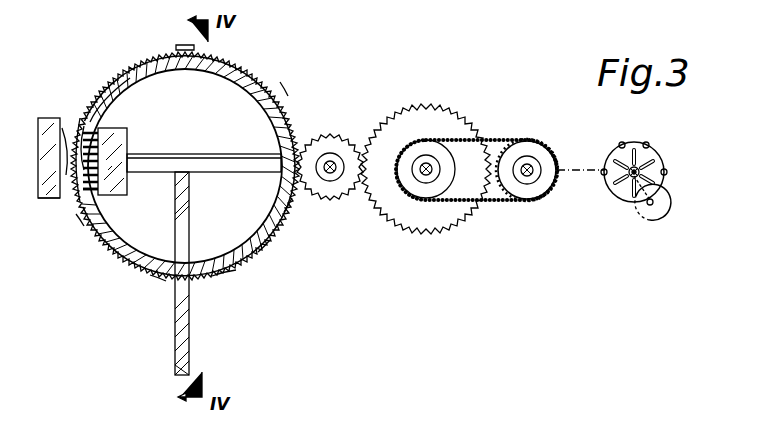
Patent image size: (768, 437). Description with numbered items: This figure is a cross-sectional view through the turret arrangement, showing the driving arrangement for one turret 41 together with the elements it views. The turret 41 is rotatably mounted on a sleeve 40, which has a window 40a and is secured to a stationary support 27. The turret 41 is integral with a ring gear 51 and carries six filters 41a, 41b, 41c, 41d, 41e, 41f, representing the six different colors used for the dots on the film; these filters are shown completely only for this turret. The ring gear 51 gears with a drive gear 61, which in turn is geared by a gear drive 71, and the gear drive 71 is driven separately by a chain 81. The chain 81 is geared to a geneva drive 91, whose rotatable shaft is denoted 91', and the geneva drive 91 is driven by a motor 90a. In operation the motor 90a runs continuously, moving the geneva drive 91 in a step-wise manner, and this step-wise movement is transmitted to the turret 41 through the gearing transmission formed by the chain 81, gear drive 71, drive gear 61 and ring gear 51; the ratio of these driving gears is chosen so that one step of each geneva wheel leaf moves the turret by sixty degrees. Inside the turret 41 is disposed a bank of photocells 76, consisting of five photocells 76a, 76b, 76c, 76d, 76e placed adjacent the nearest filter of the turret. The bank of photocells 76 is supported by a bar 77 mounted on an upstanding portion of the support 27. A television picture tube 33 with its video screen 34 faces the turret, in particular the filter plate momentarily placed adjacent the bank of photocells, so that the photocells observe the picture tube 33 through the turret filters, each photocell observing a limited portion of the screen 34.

The stationary support 27 is at (190, 350).
The television picture tube 33 is at (42, 200).
The video screen 34 is at (38, 120).
The sleeve 40 is at (236, 68).
The window 40a is at (130, 86).
The turret 41 is at (284, 72).
The filter 41a is at (180, 46).
The filter 41b is at (284, 88).
The filter 41c is at (290, 208).
The filter 41d is at (280, 250).
The filter 41e is at (158, 278).
The filter 41f is at (80, 222).
The ring gear 51 is at (230, 275).
The drive gear 61 is at (334, 200).
The gear drive 71 is at (425, 232).
The bank of photocells 76 is at (100, 130).
The photocell 76a is at (92, 190).
The photocell 76b is at (78, 190).
The photocell 76c is at (62, 132).
The photocell 76d is at (83, 128).
The photocell 76e is at (90, 125).
The bar 77 is at (205, 154).
The chain 81 is at (497, 200).
The geneva drive 91 is at (632, 198).
The rotatable shaft of the geneva drive 91' is at (685, 152).
The motor 90a is at (652, 210).